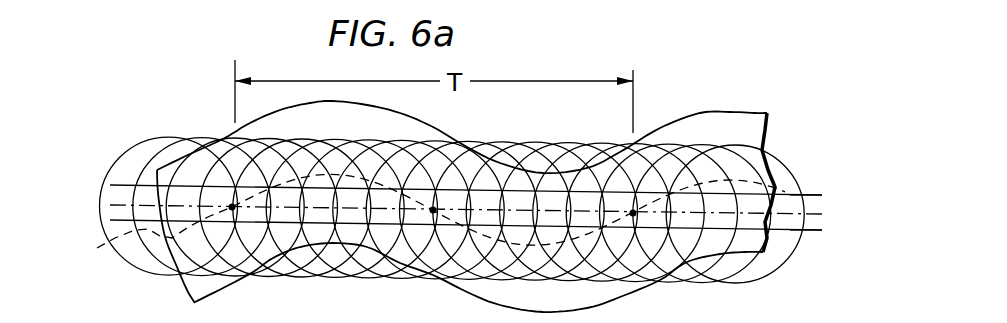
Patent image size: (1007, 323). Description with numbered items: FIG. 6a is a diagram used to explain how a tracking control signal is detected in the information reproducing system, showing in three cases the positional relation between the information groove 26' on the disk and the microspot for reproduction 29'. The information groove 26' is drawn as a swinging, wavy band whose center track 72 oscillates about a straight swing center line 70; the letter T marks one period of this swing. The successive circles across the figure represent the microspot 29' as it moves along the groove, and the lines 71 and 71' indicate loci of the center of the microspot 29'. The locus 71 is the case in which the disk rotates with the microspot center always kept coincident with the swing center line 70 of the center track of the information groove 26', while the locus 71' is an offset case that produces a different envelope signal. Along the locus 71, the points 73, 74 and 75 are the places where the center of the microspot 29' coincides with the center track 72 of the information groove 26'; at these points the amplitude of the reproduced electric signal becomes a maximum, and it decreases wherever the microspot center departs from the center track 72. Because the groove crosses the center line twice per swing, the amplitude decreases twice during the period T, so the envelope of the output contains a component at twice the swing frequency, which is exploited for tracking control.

The information groove 26' is at (467, 190).
The microspot for reproduction 29' is at (452, 219).
The swing center line 70 is at (110, 204).
The locus of the center of the microspot 71 is at (811, 230).
The locus of the center of the microspot 71' is at (800, 264).
The center track 72 is at (100, 248).
The maximum amplitude point 73 is at (232, 207).
The maximum amplitude point 74 is at (433, 210).
The maximum amplitude point 75 is at (633, 213).